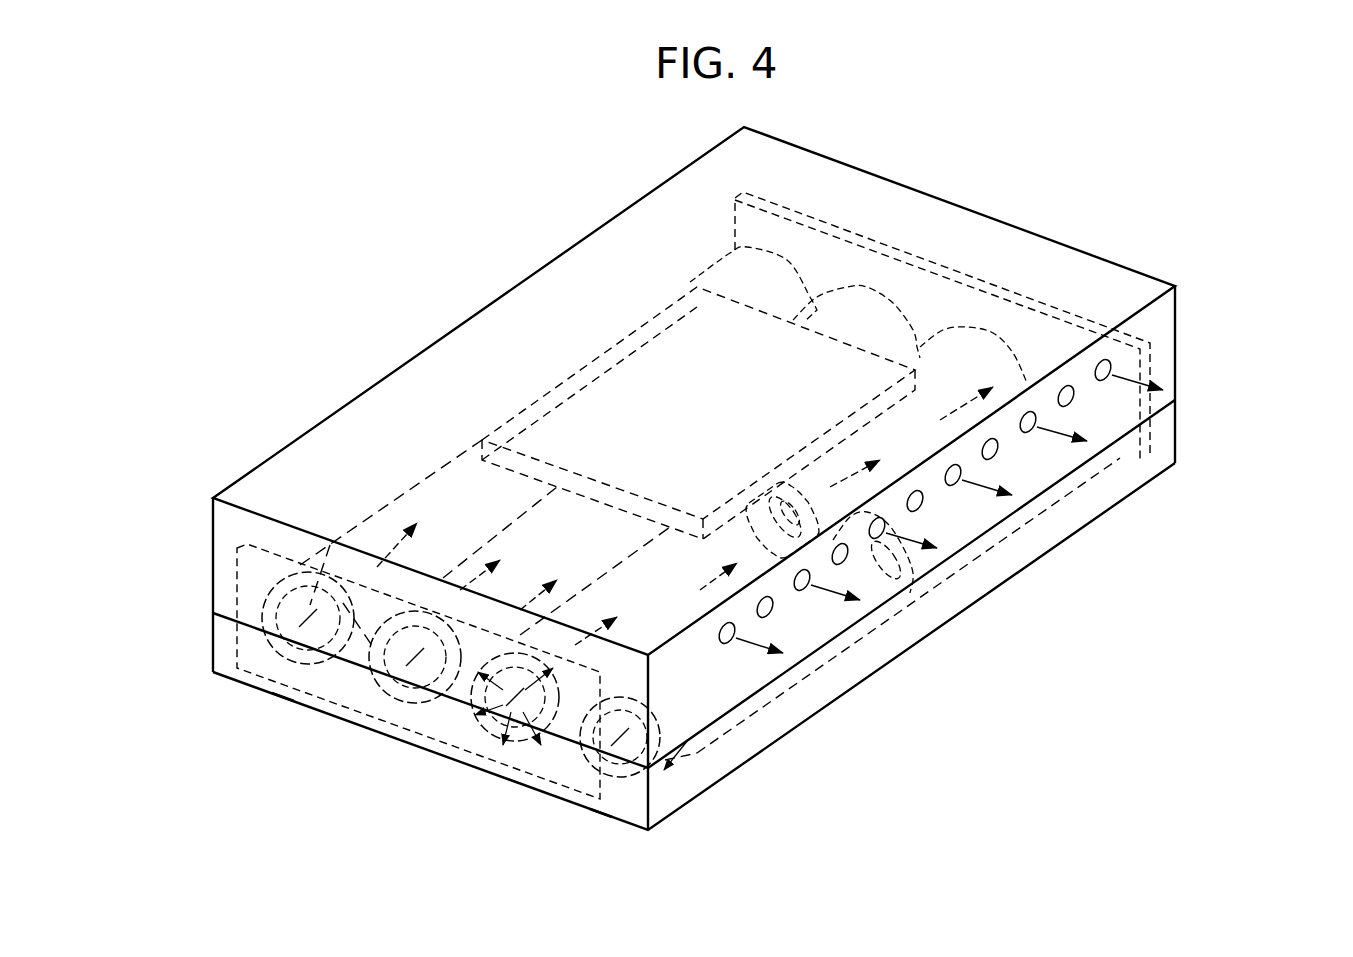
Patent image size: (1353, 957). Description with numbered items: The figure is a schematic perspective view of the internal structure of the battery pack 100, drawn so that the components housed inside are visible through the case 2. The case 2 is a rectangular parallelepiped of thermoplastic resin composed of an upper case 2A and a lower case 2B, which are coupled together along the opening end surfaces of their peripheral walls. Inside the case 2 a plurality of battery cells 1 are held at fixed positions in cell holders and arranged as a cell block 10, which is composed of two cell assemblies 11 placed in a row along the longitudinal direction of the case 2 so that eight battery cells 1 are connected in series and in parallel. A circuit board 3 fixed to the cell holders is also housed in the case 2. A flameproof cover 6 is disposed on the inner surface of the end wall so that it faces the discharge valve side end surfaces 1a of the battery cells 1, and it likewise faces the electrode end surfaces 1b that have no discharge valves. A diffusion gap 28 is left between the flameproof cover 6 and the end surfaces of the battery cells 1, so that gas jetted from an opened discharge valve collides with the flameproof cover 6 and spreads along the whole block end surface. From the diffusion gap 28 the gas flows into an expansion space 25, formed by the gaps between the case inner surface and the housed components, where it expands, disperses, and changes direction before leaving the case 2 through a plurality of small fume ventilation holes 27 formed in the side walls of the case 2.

The battery pack 100 is at (287, 218).
The battery cell 1 is at (437, 463).
The discharge valve side end surface 1a is at (603, 827).
The electrode end surface 1b is at (282, 700).
The case 2 is at (1278, 147).
The upper case 2A is at (1068, 195).
The lower case 2B is at (1205, 424).
The circuit board 3 is at (605, 370).
The flameproof cover 6 is at (903, 248).
The cell block 10 is at (1151, 660).
The cell assembly 11 is at (805, 705).
The expansion space 25 is at (443, 578).
The fume ventilation hole 27 is at (778, 612).
The diffusion gap 28 is at (700, 753).